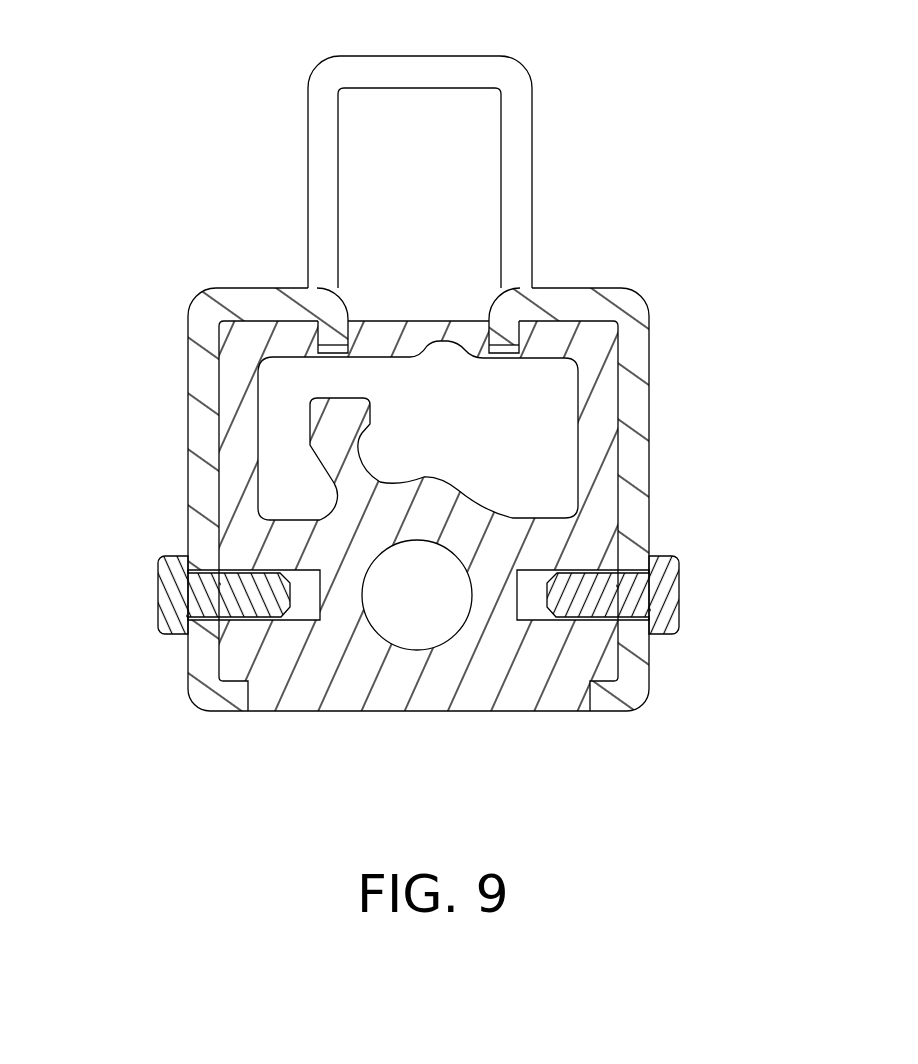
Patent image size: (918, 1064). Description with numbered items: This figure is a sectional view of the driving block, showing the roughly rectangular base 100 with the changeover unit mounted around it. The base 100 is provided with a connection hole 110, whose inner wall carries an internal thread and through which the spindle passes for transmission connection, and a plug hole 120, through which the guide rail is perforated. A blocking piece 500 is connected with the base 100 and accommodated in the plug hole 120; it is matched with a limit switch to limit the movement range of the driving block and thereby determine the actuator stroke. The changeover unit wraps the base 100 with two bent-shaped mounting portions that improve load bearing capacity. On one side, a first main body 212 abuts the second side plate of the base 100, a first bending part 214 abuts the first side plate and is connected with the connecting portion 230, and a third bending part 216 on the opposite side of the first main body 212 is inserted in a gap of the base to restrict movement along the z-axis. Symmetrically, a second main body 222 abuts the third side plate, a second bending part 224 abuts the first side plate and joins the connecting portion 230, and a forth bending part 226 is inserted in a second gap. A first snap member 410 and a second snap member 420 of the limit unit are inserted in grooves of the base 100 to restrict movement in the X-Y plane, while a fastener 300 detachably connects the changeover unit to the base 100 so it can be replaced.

The base 100 is at (312, 711).
The connection hole 110 is at (430, 622).
The plug hole 120 is at (527, 400).
The first main body 212 is at (650, 515).
The first bending part 214 is at (602, 288).
The third bending part 216 is at (608, 711).
The second main body 222 is at (187, 516).
The second bending part 224 is at (238, 288).
The forth bending part 226 is at (222, 711).
The connecting portion 230 is at (358, 56).
The fastener 300 is at (680, 598).
The first snap member 410 is at (518, 333).
The second snap member 420 is at (328, 335).
The blocking piece 500 is at (310, 410).